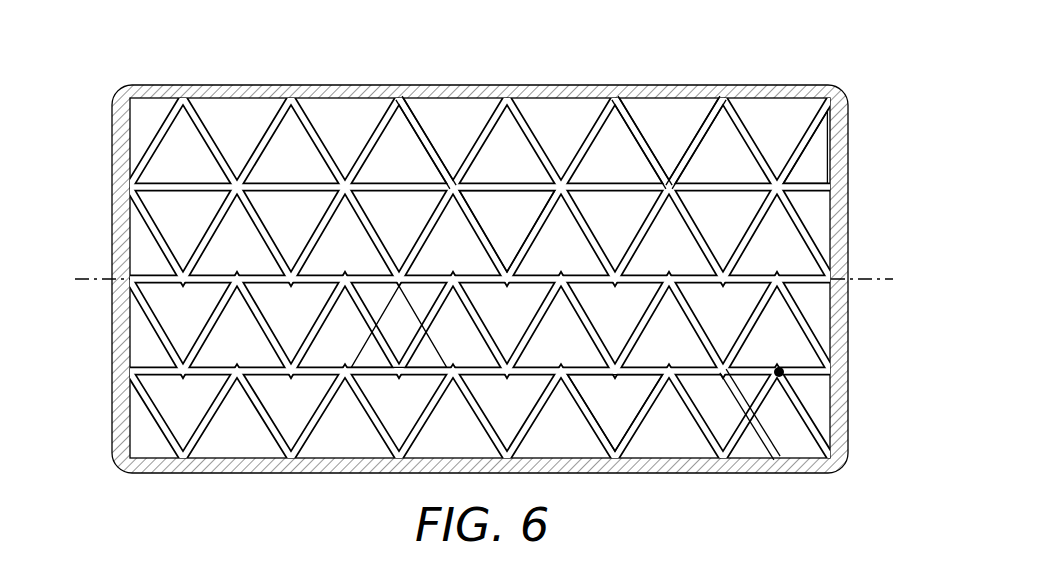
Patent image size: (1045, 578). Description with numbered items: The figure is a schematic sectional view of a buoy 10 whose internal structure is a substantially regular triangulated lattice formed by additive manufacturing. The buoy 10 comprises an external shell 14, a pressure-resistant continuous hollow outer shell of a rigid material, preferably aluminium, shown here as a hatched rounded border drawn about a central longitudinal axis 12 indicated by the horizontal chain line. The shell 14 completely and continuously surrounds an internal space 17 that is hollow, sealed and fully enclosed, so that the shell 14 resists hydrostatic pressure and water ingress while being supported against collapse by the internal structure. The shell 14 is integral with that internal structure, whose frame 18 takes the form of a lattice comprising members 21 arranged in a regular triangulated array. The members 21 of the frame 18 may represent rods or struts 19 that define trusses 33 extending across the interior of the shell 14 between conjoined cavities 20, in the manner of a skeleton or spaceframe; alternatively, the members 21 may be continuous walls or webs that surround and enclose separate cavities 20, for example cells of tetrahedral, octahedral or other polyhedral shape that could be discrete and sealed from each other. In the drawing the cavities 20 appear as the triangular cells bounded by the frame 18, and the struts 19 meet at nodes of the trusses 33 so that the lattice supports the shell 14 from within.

The buoy 10 is at (868, 64).
The central longitudinal axis 12 is at (877, 284).
The external shell 14 is at (113, 385).
The internal space 17 is at (820, 169).
The frame 18 is at (424, 132).
The struts 19 is at (757, 416).
The cavities 20 is at (521, 226).
The structural members 21 is at (692, 145).
The trusses 33 is at (782, 376).